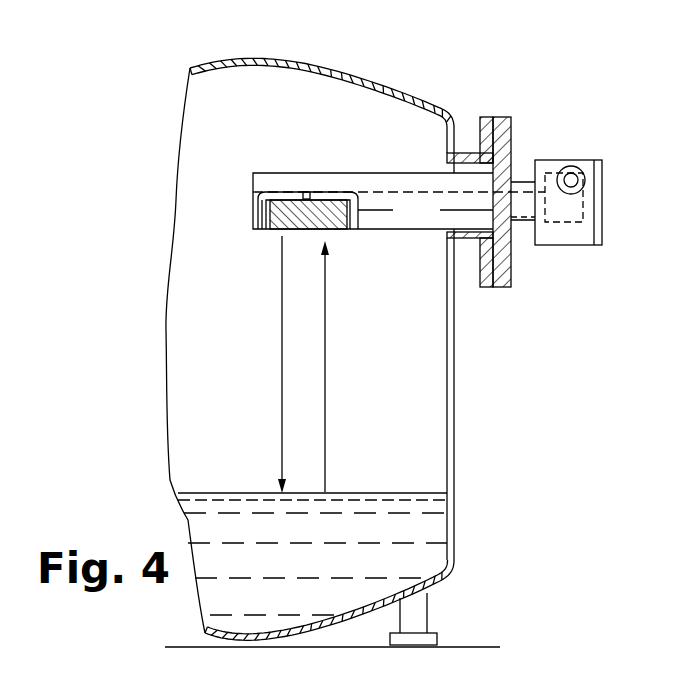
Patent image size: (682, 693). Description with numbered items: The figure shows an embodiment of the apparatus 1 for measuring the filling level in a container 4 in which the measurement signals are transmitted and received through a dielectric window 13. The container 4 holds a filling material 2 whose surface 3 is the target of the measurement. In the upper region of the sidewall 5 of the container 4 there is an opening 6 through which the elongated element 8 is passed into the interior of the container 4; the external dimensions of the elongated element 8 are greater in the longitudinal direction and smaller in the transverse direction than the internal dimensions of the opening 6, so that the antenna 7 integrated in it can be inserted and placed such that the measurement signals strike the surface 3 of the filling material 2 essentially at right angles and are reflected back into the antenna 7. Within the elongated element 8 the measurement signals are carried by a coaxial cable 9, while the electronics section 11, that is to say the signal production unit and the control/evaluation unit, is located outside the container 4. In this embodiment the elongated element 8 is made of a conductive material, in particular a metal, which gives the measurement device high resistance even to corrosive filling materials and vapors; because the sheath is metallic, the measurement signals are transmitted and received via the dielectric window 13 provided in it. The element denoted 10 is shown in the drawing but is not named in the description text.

The apparatus 1 is at (484, 93).
The filling material 2 is at (427, 528).
The surface 3 is at (203, 493).
The container 4 is at (268, 411).
The sidewall 5 is at (457, 407).
The opening 6 is at (475, 240).
The antenna 7 is at (347, 233).
The elongated element 8 is at (323, 192).
The coaxial cable 9 is at (402, 190).
The flange 10 is at (512, 124).
The electronics section 11 is at (572, 220).
The dielectric window 13 is at (268, 233).